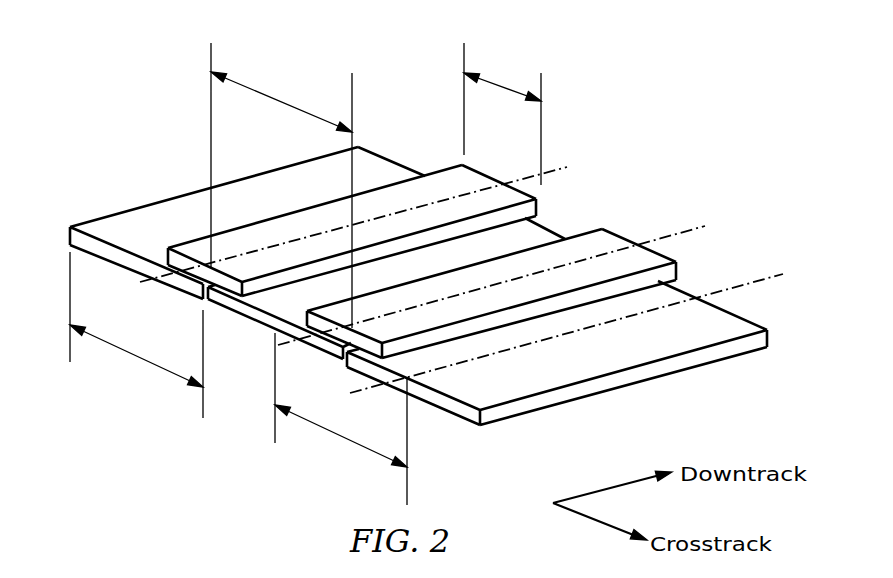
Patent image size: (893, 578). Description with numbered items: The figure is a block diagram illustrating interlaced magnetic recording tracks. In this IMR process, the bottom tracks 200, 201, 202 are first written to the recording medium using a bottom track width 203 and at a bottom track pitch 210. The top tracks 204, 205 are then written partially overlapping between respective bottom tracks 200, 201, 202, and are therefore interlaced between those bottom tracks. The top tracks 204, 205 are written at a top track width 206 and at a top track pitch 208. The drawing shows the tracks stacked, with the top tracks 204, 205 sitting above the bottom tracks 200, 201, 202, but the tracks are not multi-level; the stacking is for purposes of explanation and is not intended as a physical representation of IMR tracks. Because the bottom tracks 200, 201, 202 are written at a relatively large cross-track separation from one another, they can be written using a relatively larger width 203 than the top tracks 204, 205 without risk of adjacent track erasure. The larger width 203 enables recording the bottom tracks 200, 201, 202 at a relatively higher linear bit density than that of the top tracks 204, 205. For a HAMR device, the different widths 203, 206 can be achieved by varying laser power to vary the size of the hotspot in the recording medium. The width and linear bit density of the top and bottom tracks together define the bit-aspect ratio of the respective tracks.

The bottom track 200 is at (137, 275).
The bottom track 201 is at (240, 316).
The bottom track 202 is at (448, 413).
The bottom track width 203 is at (138, 358).
The top track 204 is at (433, 182).
The top track 205 is at (613, 234).
The top track width 206 is at (500, 78).
The top track pitch 208 is at (288, 103).
The bottom track pitch 210 is at (337, 433).